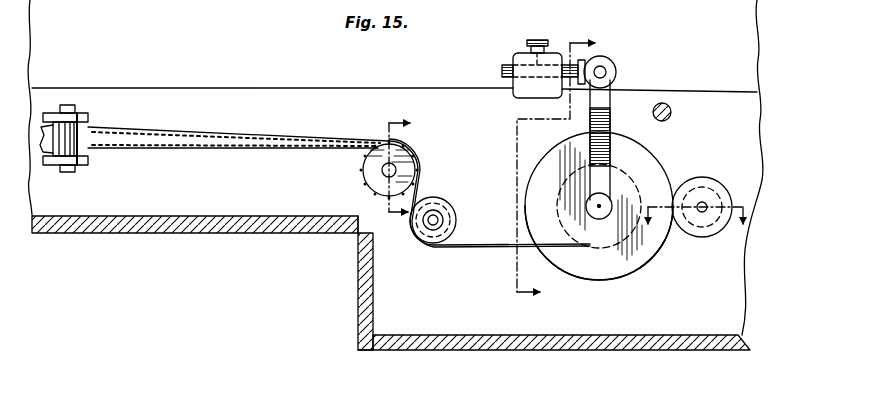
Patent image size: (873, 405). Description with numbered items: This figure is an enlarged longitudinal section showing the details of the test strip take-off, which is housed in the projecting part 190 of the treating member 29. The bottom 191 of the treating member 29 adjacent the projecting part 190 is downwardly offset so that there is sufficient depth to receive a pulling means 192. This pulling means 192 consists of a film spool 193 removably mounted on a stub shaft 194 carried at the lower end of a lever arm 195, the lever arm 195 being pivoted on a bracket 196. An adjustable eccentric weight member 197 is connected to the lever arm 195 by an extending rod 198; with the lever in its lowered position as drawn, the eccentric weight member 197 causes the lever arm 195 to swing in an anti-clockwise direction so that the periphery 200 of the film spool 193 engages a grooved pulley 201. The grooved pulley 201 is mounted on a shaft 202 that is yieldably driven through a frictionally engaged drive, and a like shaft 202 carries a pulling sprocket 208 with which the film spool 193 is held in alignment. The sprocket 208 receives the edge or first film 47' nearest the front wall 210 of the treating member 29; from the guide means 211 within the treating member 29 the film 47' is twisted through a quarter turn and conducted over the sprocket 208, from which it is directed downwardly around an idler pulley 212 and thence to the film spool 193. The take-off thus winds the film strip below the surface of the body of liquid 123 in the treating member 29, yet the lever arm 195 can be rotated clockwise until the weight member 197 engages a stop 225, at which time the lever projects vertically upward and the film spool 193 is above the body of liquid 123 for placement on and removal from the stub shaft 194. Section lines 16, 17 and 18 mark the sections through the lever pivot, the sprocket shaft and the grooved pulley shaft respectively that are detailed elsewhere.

The treating member 29 is at (243, 90).
The body of liquid 123 is at (313, 90).
The guide means 211 is at (88, 127).
The first film 47' is at (339, 187).
The pulling sprocket 208 is at (409, 159).
The shaft 202 is at (382, 169).
The idler pulley 212 is at (449, 214).
The section line 17 is at (388, 172).
The extending rod 198 is at (502, 71).
The eccentric weight member 197 is at (522, 56).
The bracket 196 is at (612, 67).
The lever arm 195 is at (605, 105).
The stop 225 is at (669, 106).
The pulling means 192 is at (666, 161).
The stub shaft 194 is at (604, 209).
The film spool 193 is at (610, 283).
The periphery 200 is at (634, 275).
The grooved pulley 201 is at (712, 182).
The section line 16 is at (542, 164).
The section line 18 is at (705, 205).
The projecting part 190 is at (358, 316).
The bottom 191 is at (462, 350).
The front wall 210 is at (175, 233).